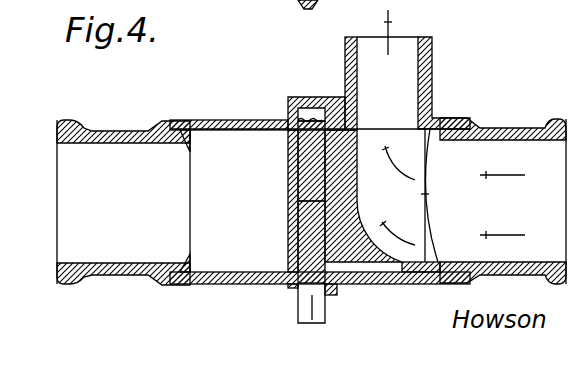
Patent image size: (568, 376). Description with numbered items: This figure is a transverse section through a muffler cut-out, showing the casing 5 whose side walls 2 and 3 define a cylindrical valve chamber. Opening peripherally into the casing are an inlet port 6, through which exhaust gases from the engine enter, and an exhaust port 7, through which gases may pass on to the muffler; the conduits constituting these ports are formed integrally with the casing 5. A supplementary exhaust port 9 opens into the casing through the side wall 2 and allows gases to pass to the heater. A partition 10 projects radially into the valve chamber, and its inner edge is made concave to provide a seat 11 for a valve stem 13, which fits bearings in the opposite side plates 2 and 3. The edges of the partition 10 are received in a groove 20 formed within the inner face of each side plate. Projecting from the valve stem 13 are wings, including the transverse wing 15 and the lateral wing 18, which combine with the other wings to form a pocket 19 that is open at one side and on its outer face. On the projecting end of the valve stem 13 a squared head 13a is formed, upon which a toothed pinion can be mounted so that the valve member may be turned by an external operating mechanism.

The side wall 2 is at (241, 120).
The side wall 3 is at (239, 284).
The casing 5 is at (318, 97).
The inlet port 6 is at (503, 201).
The exhaust port 7 is at (123, 202).
The supplementary exhaust port 9 is at (407, 70).
The partition 10 is at (244, 201).
The seat 11 is at (298, 152).
The valve stem 13 is at (300, 222).
The squared head 13a is at (300, 311).
The transverse wing 15 is at (426, 194).
The lateral wing 18 is at (413, 263).
The pocket 19 is at (396, 195).
The groove 20 is at (212, 120).